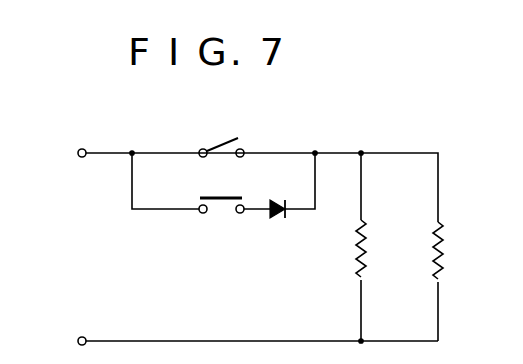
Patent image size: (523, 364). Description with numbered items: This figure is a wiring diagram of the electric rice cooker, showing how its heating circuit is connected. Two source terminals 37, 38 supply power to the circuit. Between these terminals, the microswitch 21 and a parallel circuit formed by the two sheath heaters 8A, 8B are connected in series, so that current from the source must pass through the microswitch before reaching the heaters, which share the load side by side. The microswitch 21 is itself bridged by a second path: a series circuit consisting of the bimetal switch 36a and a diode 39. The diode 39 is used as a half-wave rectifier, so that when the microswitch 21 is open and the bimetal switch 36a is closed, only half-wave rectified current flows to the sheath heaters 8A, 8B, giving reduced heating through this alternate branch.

The source terminal 37 is at (76, 153).
The source terminal 38 is at (76, 341).
The microswitch 21 is at (221, 158).
The bimetal switch 36a is at (220, 215).
The diode 39 is at (278, 220).
The sheath heater 8A is at (366, 255).
The sheath heater 8B is at (443, 257).